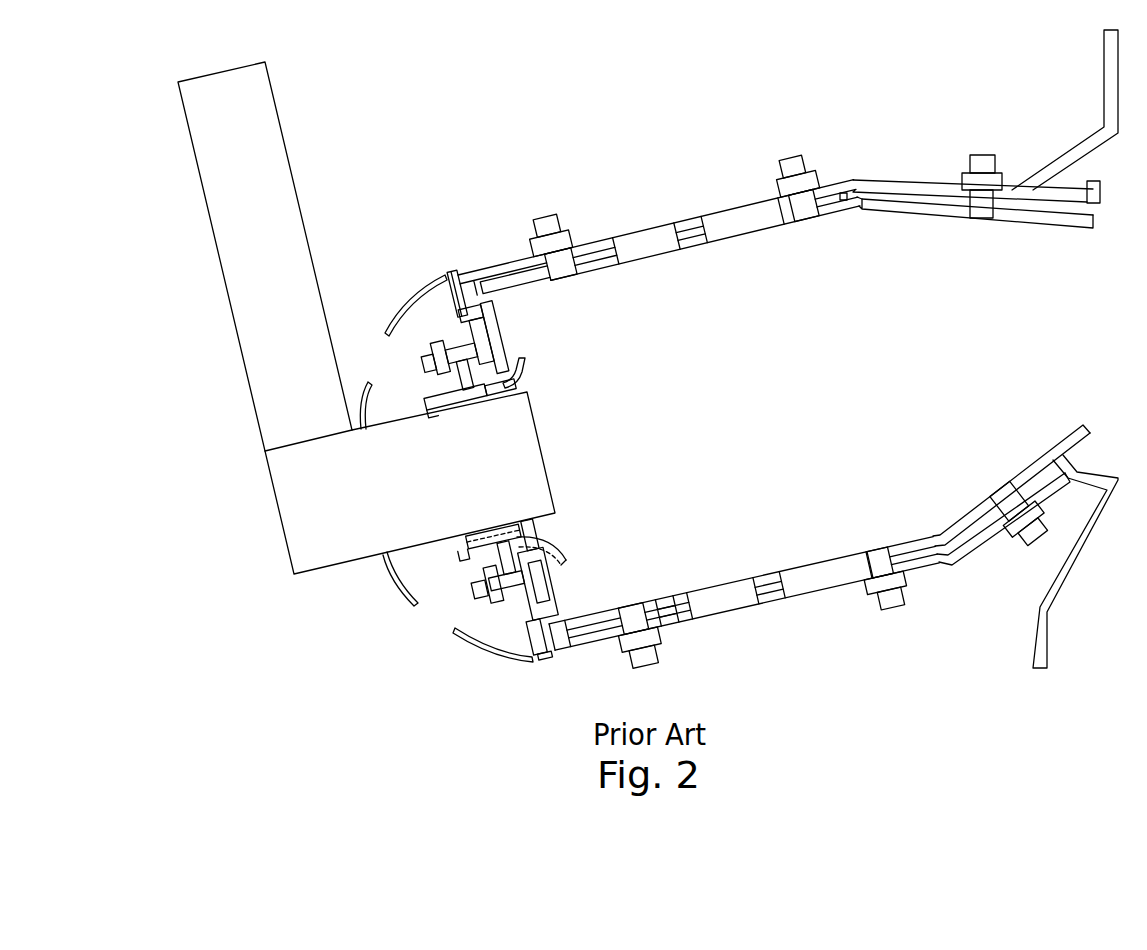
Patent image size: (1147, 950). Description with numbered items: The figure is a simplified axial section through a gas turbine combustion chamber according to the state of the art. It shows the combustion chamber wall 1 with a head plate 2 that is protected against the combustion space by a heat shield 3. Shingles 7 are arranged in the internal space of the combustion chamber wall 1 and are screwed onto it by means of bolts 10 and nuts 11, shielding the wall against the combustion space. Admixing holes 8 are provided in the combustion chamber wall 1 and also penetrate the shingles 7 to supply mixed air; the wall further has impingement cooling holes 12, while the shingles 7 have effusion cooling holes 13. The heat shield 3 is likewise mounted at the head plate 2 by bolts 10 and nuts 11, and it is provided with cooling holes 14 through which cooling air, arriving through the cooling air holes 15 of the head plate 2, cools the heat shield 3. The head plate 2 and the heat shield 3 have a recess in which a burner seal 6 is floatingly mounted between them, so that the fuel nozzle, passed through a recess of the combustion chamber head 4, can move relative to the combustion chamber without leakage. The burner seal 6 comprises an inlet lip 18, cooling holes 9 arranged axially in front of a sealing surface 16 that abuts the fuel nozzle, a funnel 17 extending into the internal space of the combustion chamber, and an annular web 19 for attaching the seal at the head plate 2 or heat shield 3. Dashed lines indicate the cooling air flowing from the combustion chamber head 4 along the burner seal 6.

The combustion chamber wall 1 is at (918, 182).
The head plate 2 is at (459, 277).
The heat shield 3 is at (293, 514).
The combustion chamber head 4 is at (386, 332).
The burner seal 6 is at (524, 367).
The shingles 7 is at (843, 208).
The admixing holes 8 is at (650, 262).
The cooling holes 9 is at (485, 400).
The bolts 10 is at (432, 347).
The nuts 11 is at (787, 193).
The impingement cooling holes 12 is at (672, 625).
The effusion cooling holes 13 is at (655, 600).
The cooling holes 14 is at (498, 347).
The cooling air holes 15 is at (452, 280).
The sealing surface 16 is at (548, 521).
The funnel 17 is at (568, 553).
The inlet lip 18 is at (430, 397).
The annular web 19 is at (505, 552).